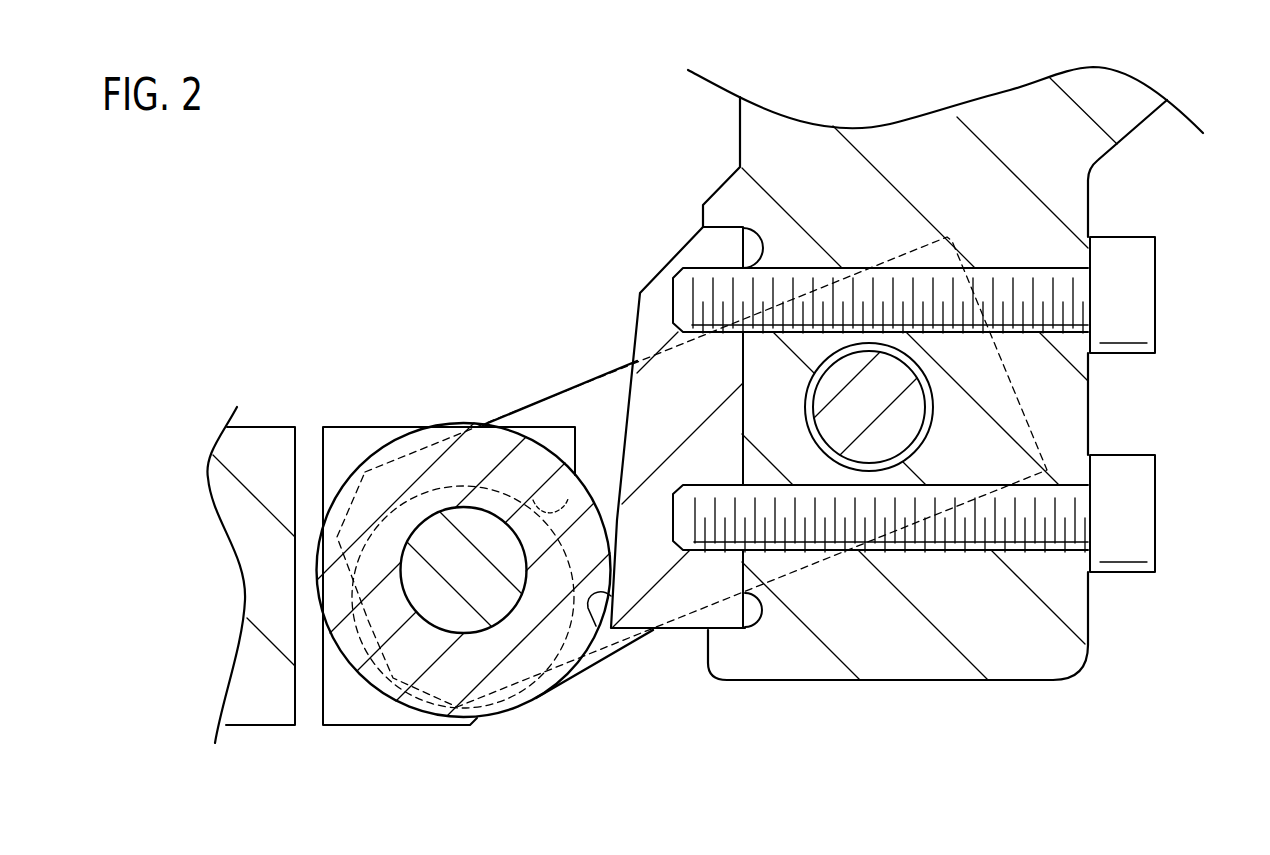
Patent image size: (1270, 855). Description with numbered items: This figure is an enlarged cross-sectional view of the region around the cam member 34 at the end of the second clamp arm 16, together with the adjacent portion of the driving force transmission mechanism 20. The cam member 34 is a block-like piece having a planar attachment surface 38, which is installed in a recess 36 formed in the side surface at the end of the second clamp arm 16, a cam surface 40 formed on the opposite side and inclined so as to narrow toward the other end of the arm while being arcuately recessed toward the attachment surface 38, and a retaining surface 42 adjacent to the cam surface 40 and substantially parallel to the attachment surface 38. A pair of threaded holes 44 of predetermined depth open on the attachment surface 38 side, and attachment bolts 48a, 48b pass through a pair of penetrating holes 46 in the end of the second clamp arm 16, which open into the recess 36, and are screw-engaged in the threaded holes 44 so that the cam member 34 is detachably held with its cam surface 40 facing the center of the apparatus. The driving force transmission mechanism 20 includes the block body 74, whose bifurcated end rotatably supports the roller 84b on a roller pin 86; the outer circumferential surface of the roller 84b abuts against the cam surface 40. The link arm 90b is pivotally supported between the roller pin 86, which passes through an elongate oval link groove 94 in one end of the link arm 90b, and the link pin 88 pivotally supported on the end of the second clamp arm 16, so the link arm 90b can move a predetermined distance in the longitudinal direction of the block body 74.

The second clamp arm 16 is at (1137, 169).
The driving force transmission mechanism 20 is at (471, 522).
The cam member 34 is at (718, 418).
The recess 36 is at (737, 357).
The attachment surface 38 is at (748, 560).
The cam surface 40 is at (628, 405).
The retaining surface 42 is at (596, 626).
The threaded hole 44 is at (713, 268).
The penetrating hole 46 is at (1012, 278).
The attachment bolt 48a is at (1143, 293).
The attachment bolt 48b is at (1143, 511).
The block body 74 is at (265, 714).
The roller 84b is at (520, 680).
The roller pin 86 is at (432, 535).
The link pin 88 is at (912, 423).
The link arm 90b is at (568, 398).
The link groove 94 is at (533, 498).